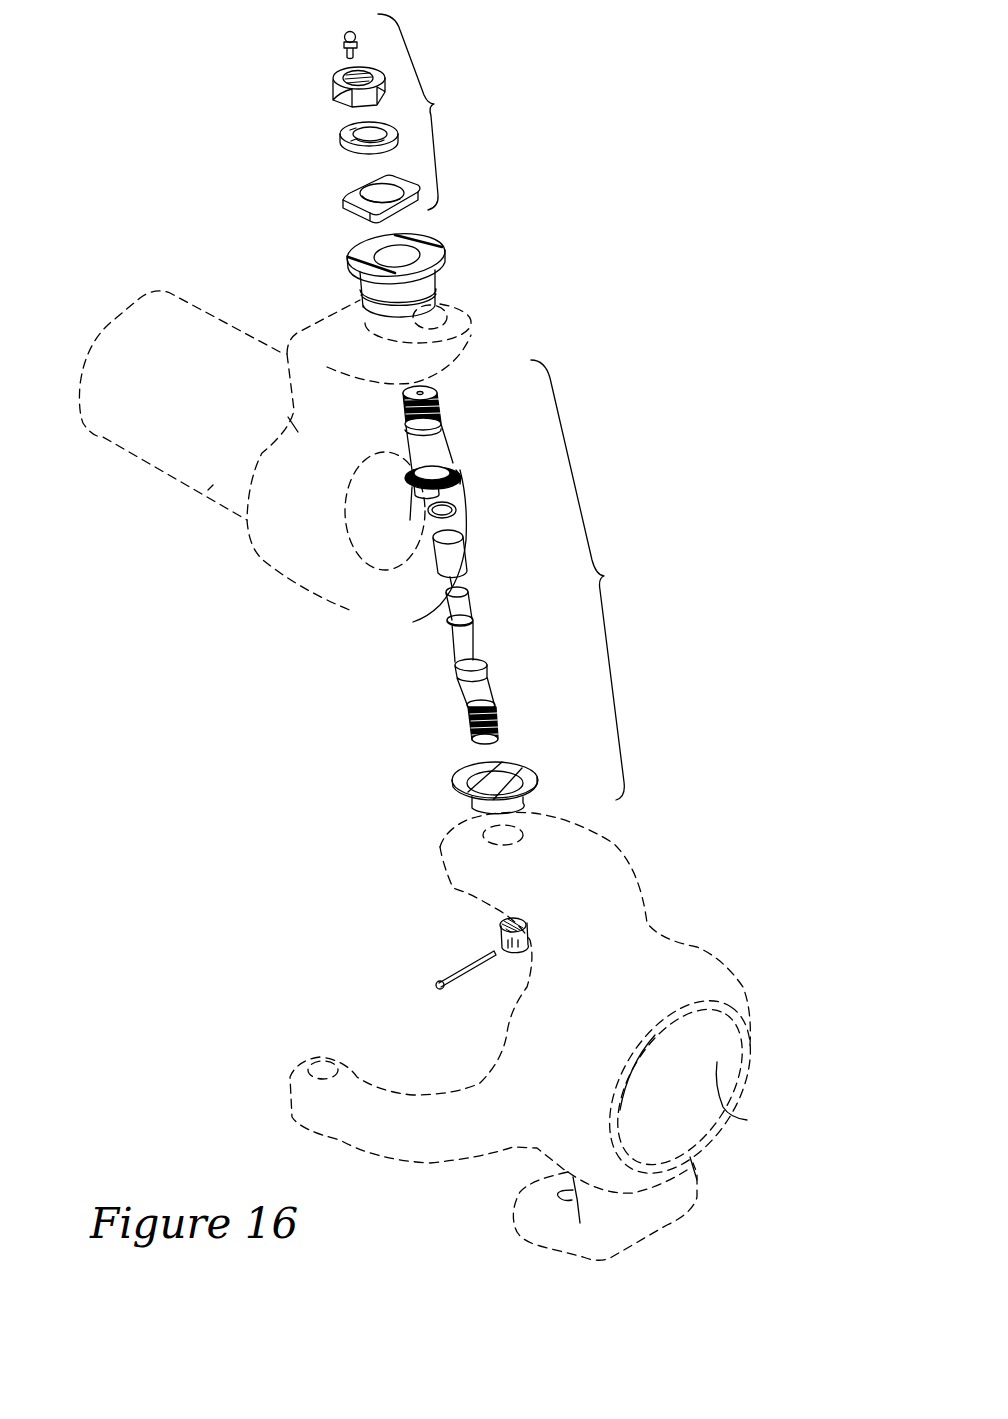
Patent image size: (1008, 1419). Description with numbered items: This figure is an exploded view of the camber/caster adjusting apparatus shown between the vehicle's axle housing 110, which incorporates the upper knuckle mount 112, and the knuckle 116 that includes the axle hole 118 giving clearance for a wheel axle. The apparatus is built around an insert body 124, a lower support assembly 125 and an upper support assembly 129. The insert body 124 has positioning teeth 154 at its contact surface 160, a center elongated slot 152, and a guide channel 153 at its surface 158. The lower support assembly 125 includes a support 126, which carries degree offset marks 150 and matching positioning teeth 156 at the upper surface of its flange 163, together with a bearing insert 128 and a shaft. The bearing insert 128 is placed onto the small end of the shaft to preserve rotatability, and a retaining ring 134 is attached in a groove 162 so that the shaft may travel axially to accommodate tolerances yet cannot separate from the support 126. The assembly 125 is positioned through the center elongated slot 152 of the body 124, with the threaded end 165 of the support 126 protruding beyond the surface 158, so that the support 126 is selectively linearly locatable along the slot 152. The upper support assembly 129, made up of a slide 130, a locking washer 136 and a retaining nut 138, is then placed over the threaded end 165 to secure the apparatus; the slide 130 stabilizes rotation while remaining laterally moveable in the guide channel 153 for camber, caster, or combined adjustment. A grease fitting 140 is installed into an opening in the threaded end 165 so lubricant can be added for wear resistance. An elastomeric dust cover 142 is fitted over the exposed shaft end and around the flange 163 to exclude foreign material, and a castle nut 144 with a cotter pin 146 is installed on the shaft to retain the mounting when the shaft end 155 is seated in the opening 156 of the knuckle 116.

The axle housing 110 is at (207, 503).
The upper knuckle mount 112 is at (471, 330).
The knuckle 116 is at (609, 1036).
The axle hole 118 is at (750, 1120).
The insert body 124 is at (403, 253).
The lower support assembly 125 is at (646, 580).
The support 126 is at (480, 436).
The bearing insert 128 is at (413, 622).
The upper support assembly 129 is at (472, 120).
The slide 130 is at (348, 192).
The retaining ring 134 is at (458, 517).
The locking washer 136 is at (342, 138).
The retaining nut 138 is at (332, 88).
The grease fitting 140 is at (342, 44).
The dust cover 142 is at (457, 782).
The castle nut 144 is at (502, 923).
The cotter pin 146 is at (452, 975).
The degree offset marks 150 is at (417, 497).
The center elongated slot 152 is at (402, 252).
The guide channel 153 is at (372, 245).
The positioning teeth 154 is at (440, 318).
The shaft end 155 is at (495, 730).
The positioning teeth / opening 156 is at (460, 458).
The surface 158 is at (343, 253).
The contact surface 160 is at (470, 327).
The groove 162 is at (529, 671).
The flange 163 is at (463, 477).
The threaded end 165 is at (440, 400).